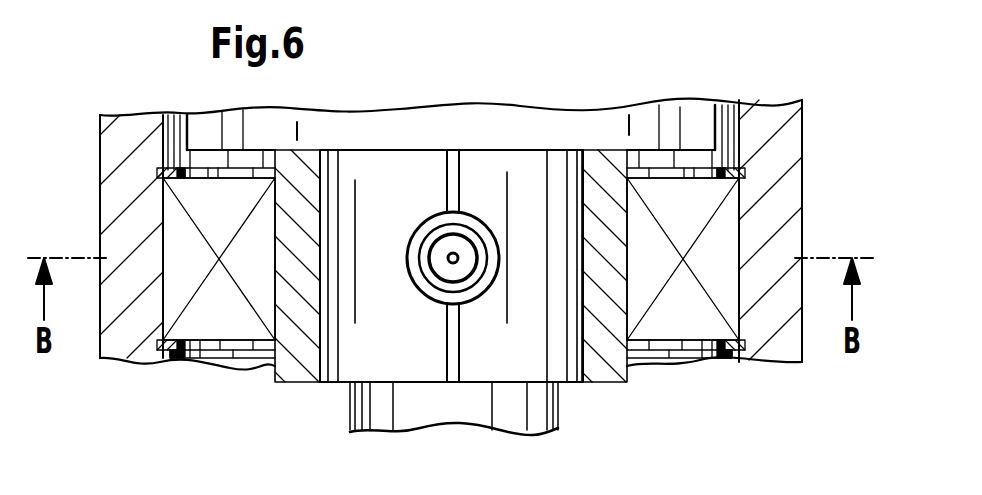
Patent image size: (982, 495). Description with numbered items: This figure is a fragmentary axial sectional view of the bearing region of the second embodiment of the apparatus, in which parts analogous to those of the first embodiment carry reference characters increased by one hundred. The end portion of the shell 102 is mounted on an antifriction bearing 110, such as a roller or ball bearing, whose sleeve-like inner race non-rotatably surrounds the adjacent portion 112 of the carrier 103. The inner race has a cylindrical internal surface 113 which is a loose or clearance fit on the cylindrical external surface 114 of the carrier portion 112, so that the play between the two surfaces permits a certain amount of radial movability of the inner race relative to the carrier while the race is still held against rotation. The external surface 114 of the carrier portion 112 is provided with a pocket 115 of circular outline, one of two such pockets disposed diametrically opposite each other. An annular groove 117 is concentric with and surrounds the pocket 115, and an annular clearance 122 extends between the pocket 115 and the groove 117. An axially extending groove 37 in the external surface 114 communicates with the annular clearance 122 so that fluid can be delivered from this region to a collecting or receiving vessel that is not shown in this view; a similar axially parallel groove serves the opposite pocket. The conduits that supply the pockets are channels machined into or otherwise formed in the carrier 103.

The axially extending groove 37 is at (447, 345).
The shell 102 is at (782, 118).
The carrier 103 is at (678, 88).
The antifriction bearing 110 is at (723, 222).
The carrier portion 112 is at (537, 352).
The cylindrical internal surface 113 is at (333, 185).
The external surface 114 is at (586, 178).
The pocket 115 is at (452, 243).
The groove 117 is at (477, 290).
The annular clearance 122 is at (468, 228).